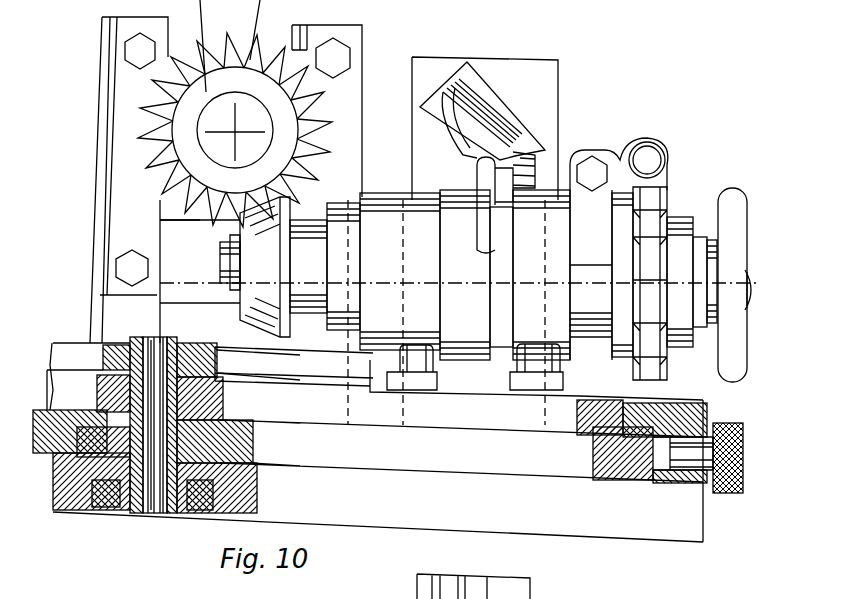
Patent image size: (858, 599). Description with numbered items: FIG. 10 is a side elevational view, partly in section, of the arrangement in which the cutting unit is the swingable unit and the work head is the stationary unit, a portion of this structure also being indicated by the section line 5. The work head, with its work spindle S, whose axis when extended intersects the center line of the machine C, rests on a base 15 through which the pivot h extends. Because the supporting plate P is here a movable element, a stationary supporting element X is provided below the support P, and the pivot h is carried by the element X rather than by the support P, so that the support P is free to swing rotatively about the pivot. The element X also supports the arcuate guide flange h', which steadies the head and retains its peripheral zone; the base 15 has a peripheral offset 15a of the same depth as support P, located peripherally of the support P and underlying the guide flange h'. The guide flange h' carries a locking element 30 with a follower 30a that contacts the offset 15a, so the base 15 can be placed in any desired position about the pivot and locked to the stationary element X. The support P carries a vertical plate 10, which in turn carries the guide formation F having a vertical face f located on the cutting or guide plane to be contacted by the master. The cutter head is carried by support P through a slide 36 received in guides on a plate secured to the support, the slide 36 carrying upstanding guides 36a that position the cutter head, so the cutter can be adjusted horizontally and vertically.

The upstanding guides 36a is at (125, 93).
The slide 36 is at (344, 150).
The vertical plate 10 is at (485, 128).
The guide formation F is at (430, 98).
The vertical face f is at (507, 125).
The work spindle S is at (225, 273).
The section line 5 is at (645, 566).
The base of the head 15 is at (456, 402).
The supporting plate P is at (378, 446).
The supporting element x is at (549, 525).
The pivot h is at (145, 454).
The center of the machine c is at (157, 515).
The peripheral offset 15a is at (605, 473).
The arcuate guide flange h' is at (639, 403).
The follower 30a is at (673, 433).
The locking element 30 is at (723, 493).